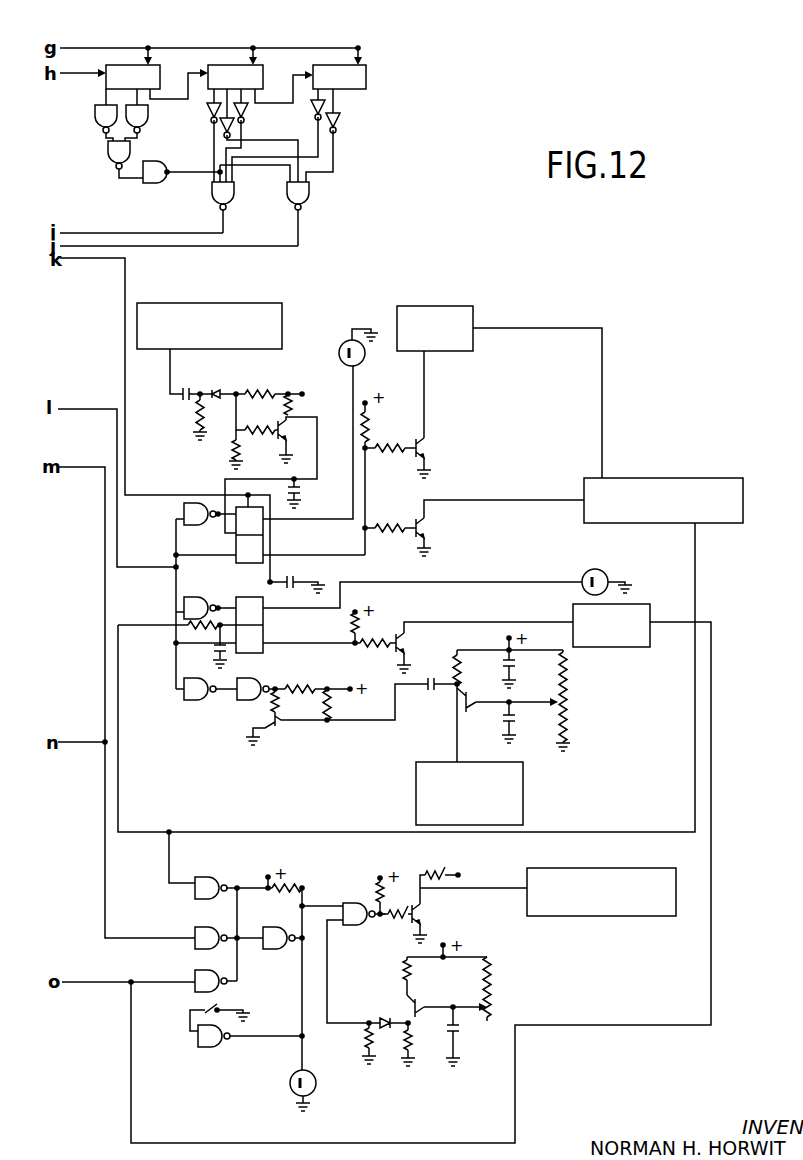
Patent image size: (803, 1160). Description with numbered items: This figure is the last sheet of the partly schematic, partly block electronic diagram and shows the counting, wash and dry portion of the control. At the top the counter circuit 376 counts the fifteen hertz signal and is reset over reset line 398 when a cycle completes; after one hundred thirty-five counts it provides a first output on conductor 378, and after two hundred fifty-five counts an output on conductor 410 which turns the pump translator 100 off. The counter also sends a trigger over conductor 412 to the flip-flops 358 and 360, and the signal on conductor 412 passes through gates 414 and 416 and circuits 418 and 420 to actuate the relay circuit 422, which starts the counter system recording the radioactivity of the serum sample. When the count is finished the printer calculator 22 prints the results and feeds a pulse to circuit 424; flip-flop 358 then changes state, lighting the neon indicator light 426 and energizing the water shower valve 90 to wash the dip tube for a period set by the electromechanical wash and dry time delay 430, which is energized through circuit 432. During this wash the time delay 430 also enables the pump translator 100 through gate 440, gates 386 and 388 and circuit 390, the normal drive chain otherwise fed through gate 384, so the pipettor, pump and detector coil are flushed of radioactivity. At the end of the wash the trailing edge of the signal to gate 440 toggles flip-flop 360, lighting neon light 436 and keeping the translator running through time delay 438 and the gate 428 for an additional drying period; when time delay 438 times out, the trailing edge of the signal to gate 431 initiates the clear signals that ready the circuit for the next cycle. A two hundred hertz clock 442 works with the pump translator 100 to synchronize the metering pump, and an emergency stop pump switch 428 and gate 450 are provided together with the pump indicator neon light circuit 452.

The reset line 398 is at (89, 47).
The counter circuit 376 is at (414, 70).
The conductor 378 is at (335, 141).
The conductor 410 is at (185, 230).
The printer calculator 22 is at (209, 302).
The neon indicator light 426 is at (351, 338).
The water shower valve 90 is at (446, 306).
The circuit 424 is at (262, 381).
The conductor 412 is at (138, 568).
The flip-flop 358 is at (263, 543).
The circuit 432 is at (429, 523).
The electromechanical wash and dry time delay 430 is at (730, 523).
The neon light 436 is at (599, 569).
The flip-flop 360 is at (263, 629).
The time delay 438 is at (615, 647).
The gate 414 is at (194, 699).
The gate 416 is at (253, 699).
The circuit 418 is at (286, 730).
The circuit 420 is at (570, 688).
The relay circuit 422 is at (526, 802).
The gate 440 is at (210, 877).
The gate 384 is at (195, 927).
The gate 431 is at (195, 970).
The gate 386 is at (284, 950).
The emergency stop pump switch 428 is at (205, 1004).
The gate 450 is at (205, 1047).
The gate 388 is at (358, 925).
The circuit 390 is at (422, 907).
The 200 hertz clock 442 is at (489, 975).
The pump indicator neon light circuit 452 is at (318, 1088).
The pump translator 100 is at (574, 868).